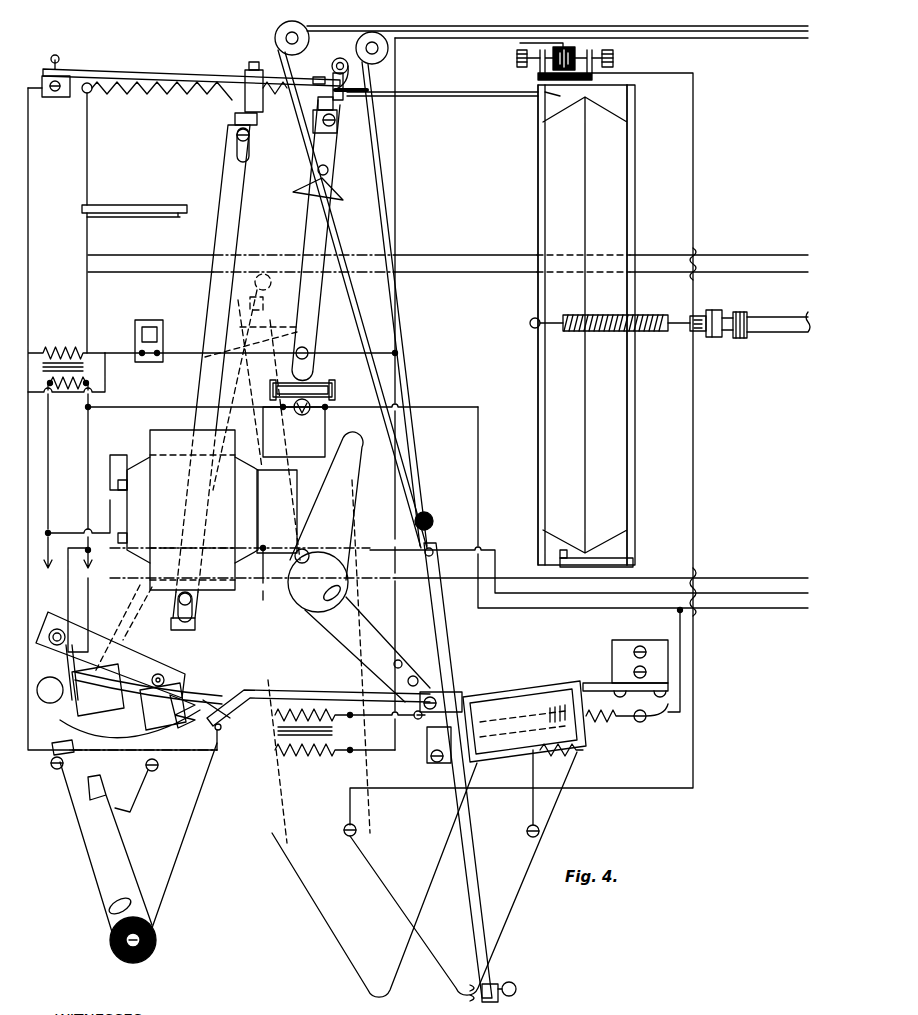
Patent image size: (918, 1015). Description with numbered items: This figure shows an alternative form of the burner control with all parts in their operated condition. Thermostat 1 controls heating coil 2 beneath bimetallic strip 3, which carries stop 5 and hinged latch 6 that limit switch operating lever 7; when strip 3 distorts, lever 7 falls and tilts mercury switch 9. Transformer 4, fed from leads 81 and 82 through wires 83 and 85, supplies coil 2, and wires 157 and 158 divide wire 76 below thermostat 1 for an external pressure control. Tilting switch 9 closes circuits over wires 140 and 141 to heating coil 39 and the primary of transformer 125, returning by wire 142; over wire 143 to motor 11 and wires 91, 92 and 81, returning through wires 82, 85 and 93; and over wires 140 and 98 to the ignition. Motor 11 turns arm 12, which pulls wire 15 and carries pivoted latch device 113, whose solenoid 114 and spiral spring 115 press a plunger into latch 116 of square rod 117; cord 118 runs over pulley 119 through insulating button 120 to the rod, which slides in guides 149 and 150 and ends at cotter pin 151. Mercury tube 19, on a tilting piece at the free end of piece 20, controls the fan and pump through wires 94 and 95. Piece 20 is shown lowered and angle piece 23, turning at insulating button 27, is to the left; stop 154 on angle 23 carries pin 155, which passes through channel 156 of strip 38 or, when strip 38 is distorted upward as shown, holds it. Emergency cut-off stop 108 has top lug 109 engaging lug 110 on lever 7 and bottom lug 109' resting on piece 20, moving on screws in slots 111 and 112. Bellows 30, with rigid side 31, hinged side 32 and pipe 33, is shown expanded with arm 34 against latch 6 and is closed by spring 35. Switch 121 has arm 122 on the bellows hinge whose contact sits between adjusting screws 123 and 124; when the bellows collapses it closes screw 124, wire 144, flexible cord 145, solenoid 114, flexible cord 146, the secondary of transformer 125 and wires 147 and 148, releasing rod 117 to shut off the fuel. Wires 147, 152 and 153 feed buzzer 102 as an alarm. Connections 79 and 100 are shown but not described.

The thermostat 1 is at (137, 207).
The heating coil 2 is at (178, 92).
The bimetallic strip 3 is at (190, 78).
The transformer 4 is at (55, 353).
The stop 5 is at (264, 100).
The swinging hinged latch 6 is at (346, 74).
The switch operating lever 7 is at (300, 290).
The mercury switch 9 is at (300, 417).
The electric motor 11 is at (172, 440).
The arm 12 is at (372, 626).
The wire 15 is at (745, 31).
The mercury tube 19 is at (56, 678).
The piece 20 is at (150, 668).
The angle piece 23 is at (96, 874).
The insulating button 27 is at (153, 934).
The bellows 30 is at (613, 293).
The rigid side 31 is at (633, 437).
The pivoted side 32 is at (538, 429).
The pipe 33 is at (786, 330).
The arm 34 is at (446, 97).
The spring 35 is at (648, 332).
The bimetallic strip 38 is at (313, 684).
The heating coil 39 is at (625, 722).
The wire 76 is at (88, 240).
The terminal block 79 is at (55, 97).
The wire 81 is at (71, 545).
The wire 82 is at (88, 560).
The wire 83 is at (48, 447).
The wire 85 is at (88, 477).
The wire 91 is at (118, 538).
The wire 92 is at (74, 533).
The wire 93 is at (282, 399).
The wire 94 is at (793, 578).
The wire 95 is at (792, 610).
The wire 98 is at (755, 610).
The screw terminal 100 is at (650, 712).
The buzzer 102 is at (147, 320).
The emergency cut-off stop 108 is at (232, 238).
The top lug 109 is at (221, 124).
The clip 109' is at (203, 629).
The lug 110 is at (313, 121).
The slot 111 is at (237, 150).
The slot 112 is at (192, 611).
The latch device 113 is at (522, 760).
The solenoid 114 is at (521, 690).
The spiral spring 115 is at (568, 720).
The latch 116 is at (430, 735).
The square rod 117 is at (468, 847).
The cord 118 is at (790, 35).
The pulley 119 is at (386, 50).
The insulating button 120 is at (433, 521).
The switching device 121 is at (538, 74).
The arm 122 is at (568, 47).
The adjusting screw 123 is at (517, 58).
The adjusting screw 124 is at (613, 58).
The transformer 125 is at (312, 752).
The wire 140 is at (440, 407).
The wire 141 is at (680, 626).
The wire 142 is at (143, 578).
The wire 143 is at (316, 438).
The wire 144 is at (693, 93).
The flexible cord 145 is at (367, 850).
The flexible cord 146 is at (469, 793).
The wire 147 is at (381, 762).
The wire 148 is at (395, 311).
The guide 149 is at (452, 692).
The guide 150 is at (446, 762).
The cotter pin 151 is at (504, 983).
The wire 152 is at (380, 353).
The wire 153 is at (105, 381).
The stop 154 is at (172, 855).
The pin 155 is at (222, 729).
The channel 156 is at (228, 713).
The wire 157 is at (790, 255).
The wire 158 is at (790, 272).